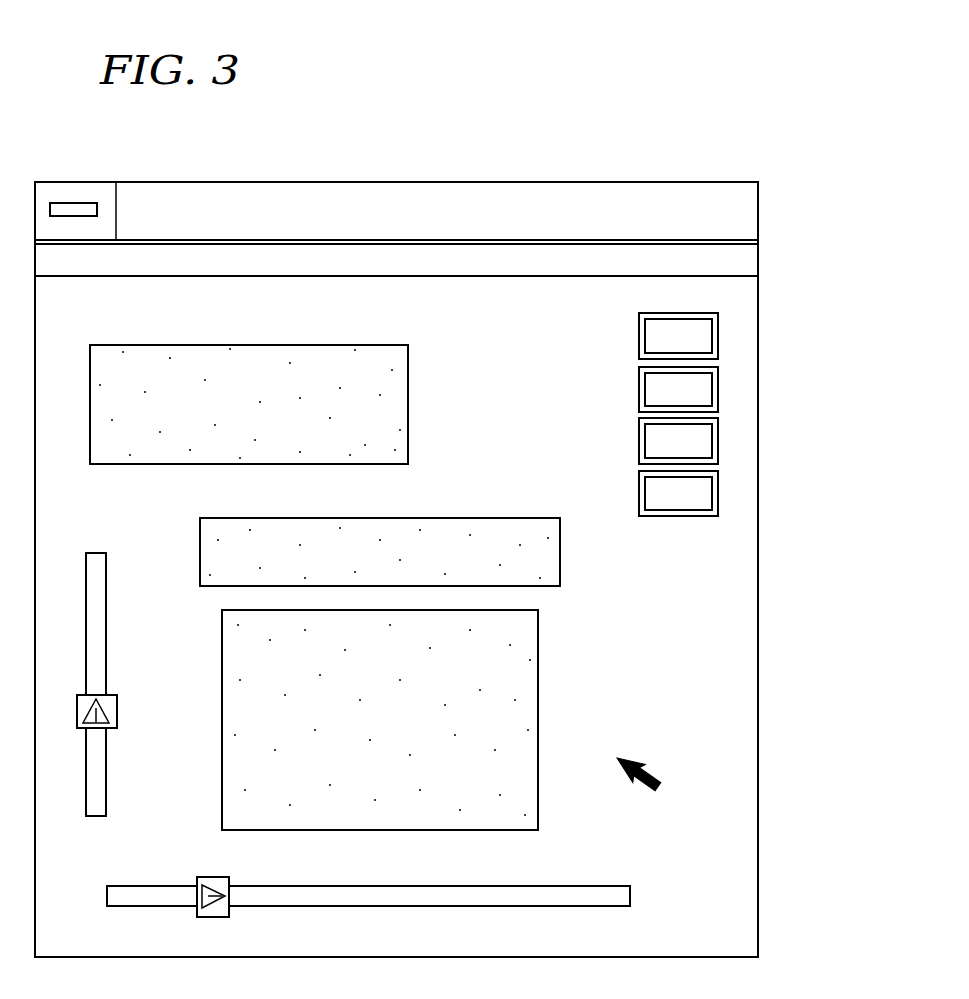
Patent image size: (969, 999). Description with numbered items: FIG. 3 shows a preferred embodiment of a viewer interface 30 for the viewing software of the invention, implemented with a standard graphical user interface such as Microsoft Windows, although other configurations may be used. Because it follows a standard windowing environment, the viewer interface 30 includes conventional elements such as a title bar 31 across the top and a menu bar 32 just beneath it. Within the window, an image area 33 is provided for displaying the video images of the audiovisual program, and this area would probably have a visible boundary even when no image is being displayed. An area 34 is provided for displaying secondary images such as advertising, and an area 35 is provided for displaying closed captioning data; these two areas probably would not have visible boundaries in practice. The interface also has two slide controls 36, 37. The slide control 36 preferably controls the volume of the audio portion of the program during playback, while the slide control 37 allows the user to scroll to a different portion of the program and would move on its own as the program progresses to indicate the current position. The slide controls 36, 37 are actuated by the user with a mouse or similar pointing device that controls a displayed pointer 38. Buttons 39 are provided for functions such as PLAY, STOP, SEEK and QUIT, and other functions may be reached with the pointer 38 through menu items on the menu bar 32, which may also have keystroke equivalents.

The viewer interface 30 is at (348, 116).
The title bar 31 is at (468, 198).
The menu bar 32 is at (750, 262).
The image area 33 is at (535, 703).
The area for secondary images 34 is at (400, 405).
The area for closed captioning data 35 is at (484, 526).
The slide control 36 is at (113, 708).
The slide control 37 is at (213, 877).
The pointer 38 is at (645, 762).
The buttons 39 is at (633, 305).